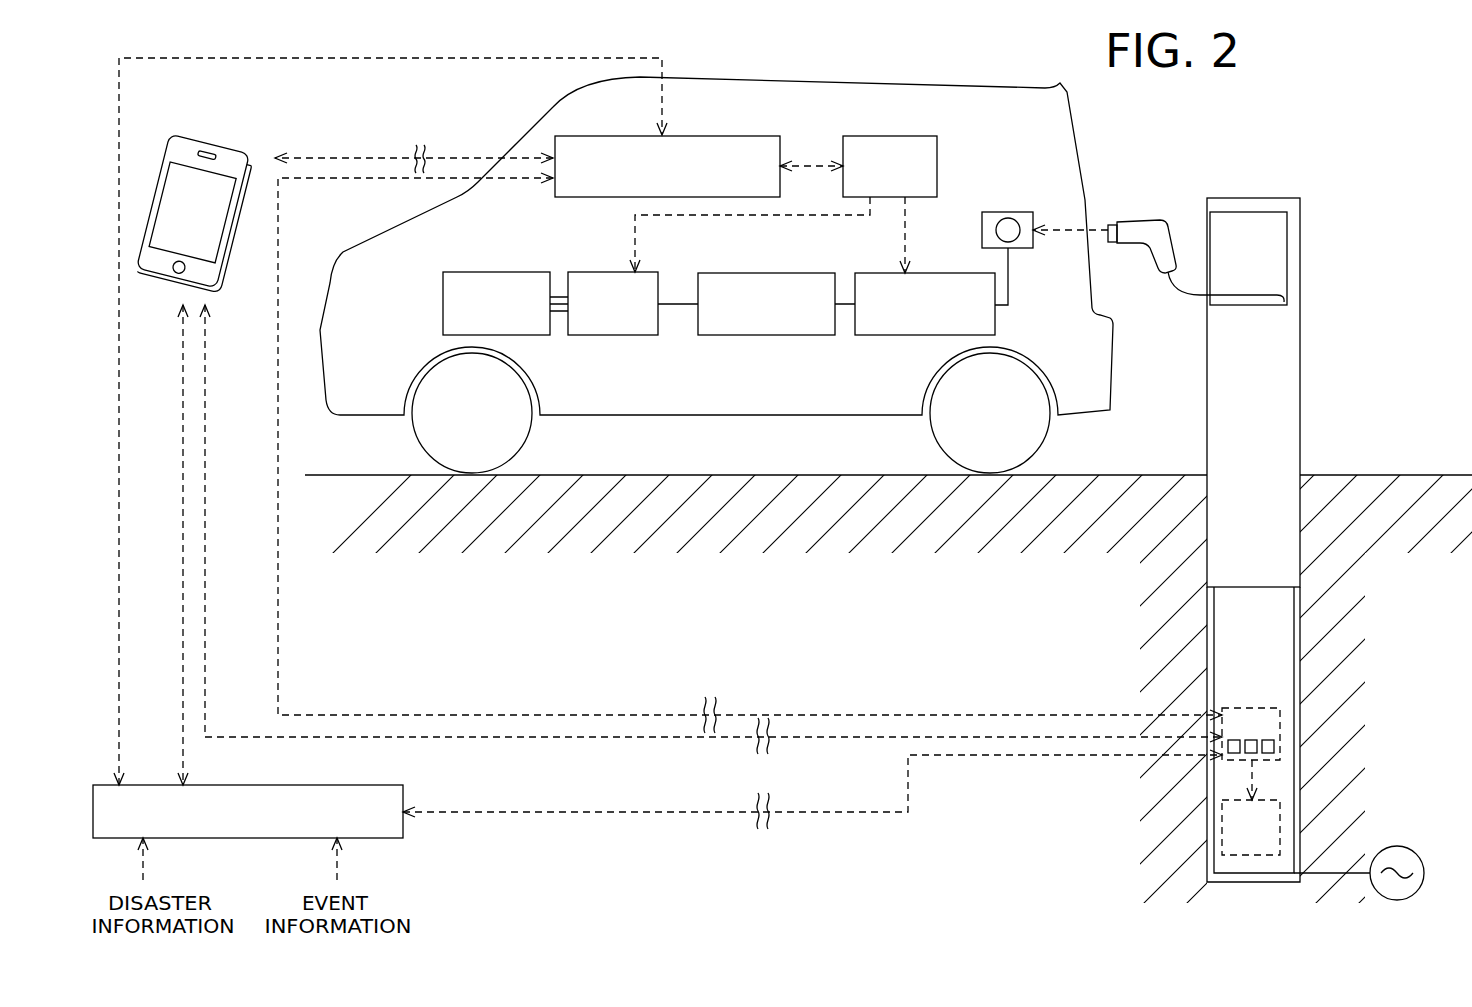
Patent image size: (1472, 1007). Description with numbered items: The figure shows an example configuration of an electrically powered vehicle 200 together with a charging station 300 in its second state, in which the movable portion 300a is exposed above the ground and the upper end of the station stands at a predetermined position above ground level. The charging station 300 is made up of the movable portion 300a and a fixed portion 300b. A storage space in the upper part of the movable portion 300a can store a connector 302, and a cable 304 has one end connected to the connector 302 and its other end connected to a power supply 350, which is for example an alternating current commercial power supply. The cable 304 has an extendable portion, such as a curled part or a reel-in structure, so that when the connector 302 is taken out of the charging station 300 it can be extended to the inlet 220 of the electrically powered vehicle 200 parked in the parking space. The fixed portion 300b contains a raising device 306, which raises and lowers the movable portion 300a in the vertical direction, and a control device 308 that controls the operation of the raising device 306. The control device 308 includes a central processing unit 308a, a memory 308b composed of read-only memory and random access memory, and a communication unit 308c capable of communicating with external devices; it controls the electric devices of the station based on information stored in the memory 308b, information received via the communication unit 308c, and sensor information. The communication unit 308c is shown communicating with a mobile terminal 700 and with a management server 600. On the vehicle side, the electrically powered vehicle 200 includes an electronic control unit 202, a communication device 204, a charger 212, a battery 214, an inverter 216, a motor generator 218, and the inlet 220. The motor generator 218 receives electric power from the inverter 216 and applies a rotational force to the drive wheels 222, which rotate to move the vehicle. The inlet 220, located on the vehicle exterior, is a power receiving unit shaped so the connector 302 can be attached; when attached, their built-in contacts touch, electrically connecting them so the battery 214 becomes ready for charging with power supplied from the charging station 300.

The electrically powered vehicle 200 is at (897, 85).
The electronic control unit (ECU) 202 is at (893, 133).
The communication device 204 is at (692, 134).
The charger 212 is at (945, 272).
The battery 214 is at (760, 272).
The inverter 216 is at (595, 270).
The motor generator 218 is at (487, 270).
The inlet 220 is at (1008, 212).
The drive wheels 222 is at (533, 392).
The charging station 300 is at (1266, 177).
The movable portion 300a is at (1290, 196).
The fixed portion 300b is at (1240, 873).
The connector 302 is at (1135, 215).
The cable 304 is at (1245, 306).
The raising device 306 is at (1280, 822).
The control device 308 is at (1280, 748).
The central processing unit (CPU) 308a is at (1267, 740).
The memory 308b is at (1253, 740).
The communication unit 308c is at (1233, 757).
The power supply 350 is at (1415, 893).
The management server 600 is at (315, 785).
The mobile terminal 700 is at (223, 130).